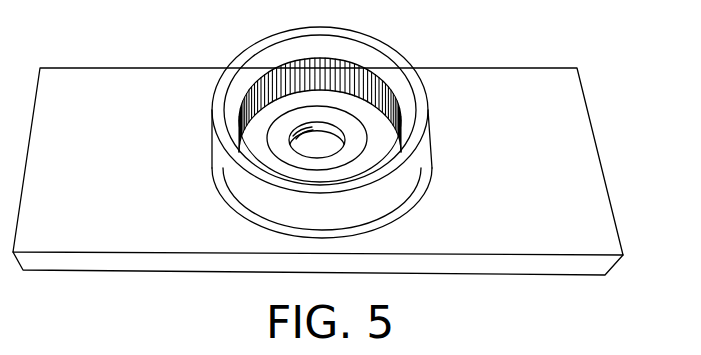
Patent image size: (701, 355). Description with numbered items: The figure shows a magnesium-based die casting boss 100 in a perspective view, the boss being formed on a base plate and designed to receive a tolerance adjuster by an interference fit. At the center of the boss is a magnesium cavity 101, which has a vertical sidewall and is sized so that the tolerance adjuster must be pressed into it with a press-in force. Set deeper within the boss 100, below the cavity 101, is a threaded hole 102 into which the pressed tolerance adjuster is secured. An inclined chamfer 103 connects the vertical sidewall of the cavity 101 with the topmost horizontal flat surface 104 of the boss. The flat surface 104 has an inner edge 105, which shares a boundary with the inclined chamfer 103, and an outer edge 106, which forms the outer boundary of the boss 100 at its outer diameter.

The magnesium-based die casting boss 100 is at (155, 91).
The magnesium cavity 101 is at (362, 118).
The threaded hole 102 is at (310, 150).
The inclined chamfer 103 is at (375, 66).
The topmost horizontal flat surface 104 is at (426, 100).
The inner edge 105 is at (220, 88).
The outer edge 106 is at (211, 127).